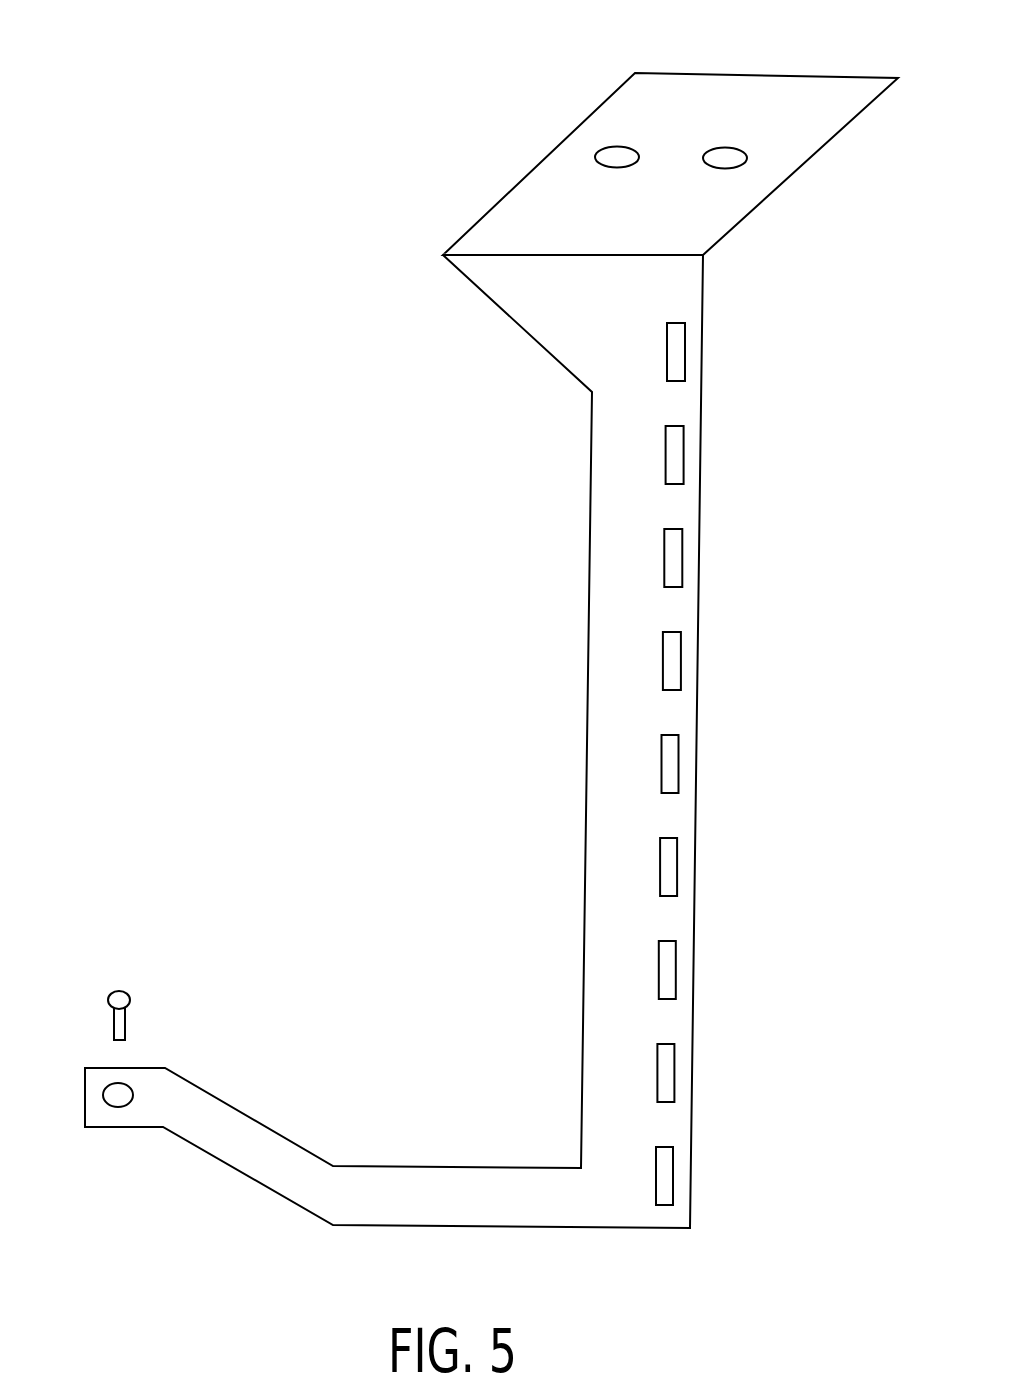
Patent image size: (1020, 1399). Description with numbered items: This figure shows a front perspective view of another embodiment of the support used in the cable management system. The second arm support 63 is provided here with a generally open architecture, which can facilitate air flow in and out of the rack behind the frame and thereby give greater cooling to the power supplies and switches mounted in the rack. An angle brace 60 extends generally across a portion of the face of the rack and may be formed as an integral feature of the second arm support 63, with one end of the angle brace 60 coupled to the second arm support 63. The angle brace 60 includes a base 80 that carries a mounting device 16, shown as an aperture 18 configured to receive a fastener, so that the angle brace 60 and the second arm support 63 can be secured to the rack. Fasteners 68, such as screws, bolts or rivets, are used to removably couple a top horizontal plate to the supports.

The mounting device 16 is at (80, 1037).
The aperture 18 is at (118, 1108).
The angle brace 60 is at (428, 1110).
The second arm support 63 is at (587, 662).
The fastener 68 is at (725, 147).
The base 80 is at (210, 982).